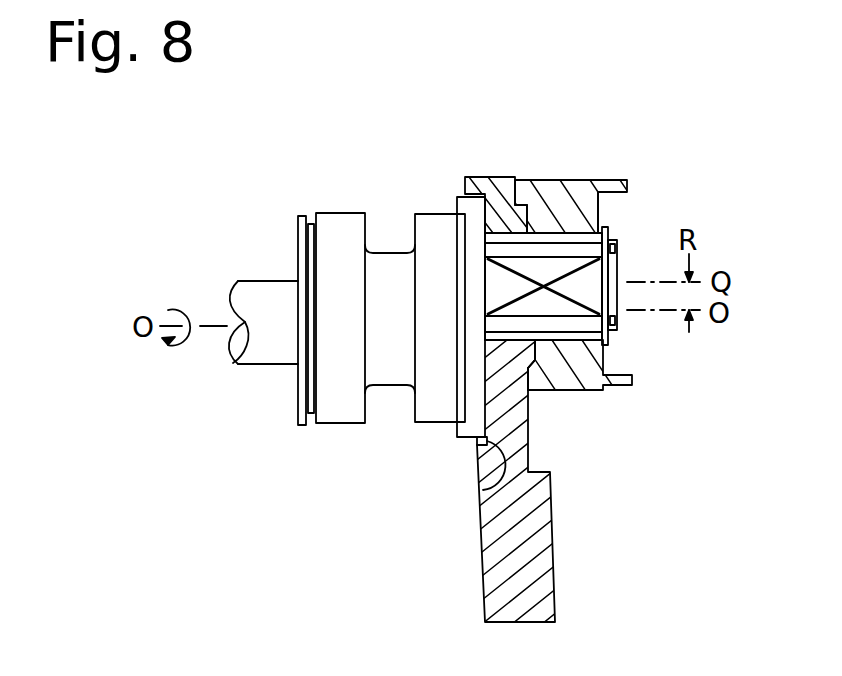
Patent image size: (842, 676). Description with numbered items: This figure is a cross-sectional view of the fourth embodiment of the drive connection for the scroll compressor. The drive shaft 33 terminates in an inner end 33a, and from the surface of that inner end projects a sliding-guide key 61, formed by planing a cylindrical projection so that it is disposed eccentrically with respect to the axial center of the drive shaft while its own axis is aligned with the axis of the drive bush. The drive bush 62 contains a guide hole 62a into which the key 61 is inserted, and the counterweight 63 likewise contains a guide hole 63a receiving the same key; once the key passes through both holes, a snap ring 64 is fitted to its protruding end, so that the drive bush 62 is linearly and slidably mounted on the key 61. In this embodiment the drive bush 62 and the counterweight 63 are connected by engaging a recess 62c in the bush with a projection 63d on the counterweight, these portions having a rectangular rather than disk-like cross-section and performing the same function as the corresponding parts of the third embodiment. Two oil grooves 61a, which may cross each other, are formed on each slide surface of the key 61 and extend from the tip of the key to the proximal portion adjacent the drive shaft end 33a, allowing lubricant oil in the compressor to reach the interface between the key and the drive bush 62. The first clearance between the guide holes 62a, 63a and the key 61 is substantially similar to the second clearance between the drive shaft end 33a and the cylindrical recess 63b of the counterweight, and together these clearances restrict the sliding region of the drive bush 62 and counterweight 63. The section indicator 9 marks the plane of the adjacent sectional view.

The section line / view direction 9 is at (537, 448).
The drive shaft 33 is at (253, 297).
The inner end of the drive shaft 33a is at (472, 440).
The sliding-guide key 61 is at (567, 307).
The oil grooves 61a is at (616, 250).
The drive bush 62 is at (591, 191).
The guide hole 62a is at (544, 238).
The recess 62c is at (531, 380).
The counterweight 63 is at (543, 565).
The guide hole 63a is at (511, 238).
The cylindrical recess 63b is at (480, 490).
The projection 63d is at (612, 401).
The snap ring 64 is at (607, 228).